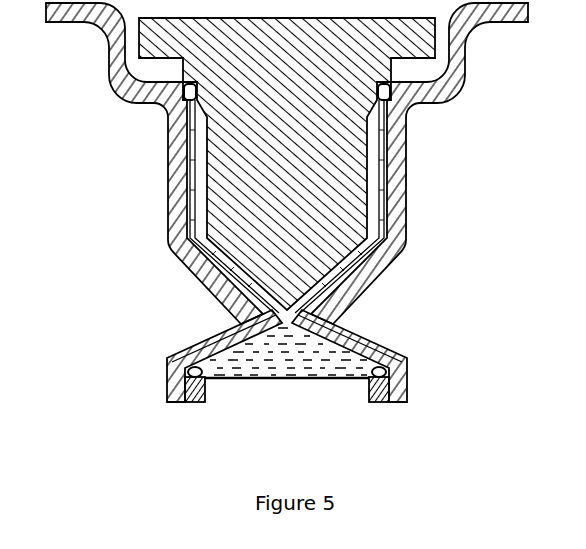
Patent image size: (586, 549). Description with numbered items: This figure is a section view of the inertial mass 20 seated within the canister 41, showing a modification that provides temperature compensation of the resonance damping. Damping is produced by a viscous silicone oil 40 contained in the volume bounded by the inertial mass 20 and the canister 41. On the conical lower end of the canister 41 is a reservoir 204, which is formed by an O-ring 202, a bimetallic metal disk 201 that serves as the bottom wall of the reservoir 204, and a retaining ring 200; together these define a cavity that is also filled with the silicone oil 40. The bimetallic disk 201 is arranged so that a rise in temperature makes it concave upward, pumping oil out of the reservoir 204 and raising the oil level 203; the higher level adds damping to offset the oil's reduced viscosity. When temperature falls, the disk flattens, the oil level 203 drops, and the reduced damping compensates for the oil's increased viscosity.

The inertial mass 20 is at (358, 155).
The viscous liquid (silicone oil) 40 is at (380, 216).
The canister 41 is at (362, 281).
The retaining ring 200 is at (207, 386).
The bimetallic metal disk 201 is at (277, 380).
The O-ring 202 is at (402, 365).
The oil level 203 is at (165, 120).
The reservoir 204 is at (198, 342).